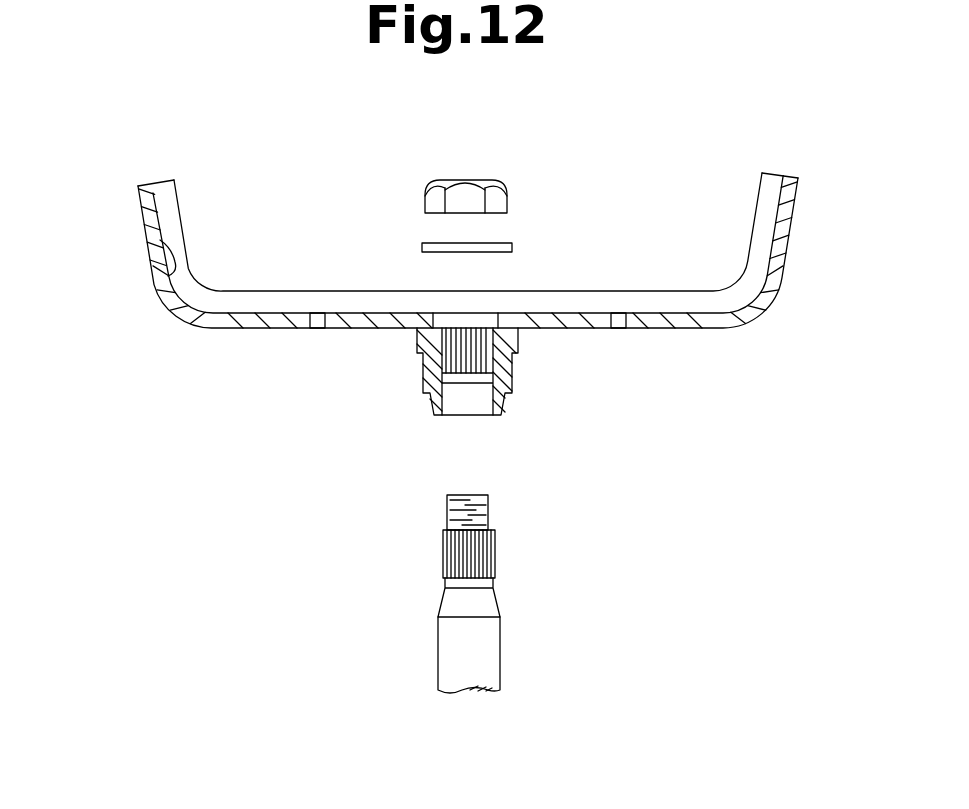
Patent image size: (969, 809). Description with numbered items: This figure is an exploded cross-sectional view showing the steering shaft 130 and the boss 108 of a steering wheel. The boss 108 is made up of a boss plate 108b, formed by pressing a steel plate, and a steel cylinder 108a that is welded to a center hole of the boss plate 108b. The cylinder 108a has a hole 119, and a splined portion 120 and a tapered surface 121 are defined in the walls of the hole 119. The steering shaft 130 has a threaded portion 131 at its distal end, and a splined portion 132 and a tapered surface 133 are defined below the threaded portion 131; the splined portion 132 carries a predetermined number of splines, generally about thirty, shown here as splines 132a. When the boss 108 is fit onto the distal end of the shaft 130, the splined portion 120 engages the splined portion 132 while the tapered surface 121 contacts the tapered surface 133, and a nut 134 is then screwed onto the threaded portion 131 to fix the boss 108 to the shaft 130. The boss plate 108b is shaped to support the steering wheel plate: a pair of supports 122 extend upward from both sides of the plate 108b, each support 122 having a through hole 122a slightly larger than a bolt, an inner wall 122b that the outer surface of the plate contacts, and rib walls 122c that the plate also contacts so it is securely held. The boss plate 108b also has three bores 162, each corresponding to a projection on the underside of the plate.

The support 122 is at (152, 190).
The through hole 122a is at (148, 230).
The inner wall 122b is at (178, 263).
The rib wall 122c is at (757, 233).
The bore 162 is at (318, 317).
The nut 134 is at (478, 160).
The splined portion 120 is at (488, 330).
The hole 119 is at (487, 385).
The tapered surface 121 is at (492, 405).
The boss 108 is at (348, 387).
The steel cylinder 108a is at (423, 370).
The boss plate 108b is at (360, 330).
The steering shaft 130 is at (500, 660).
The threaded portion 131 is at (488, 512).
The splined portion 132 is at (455, 555).
The serrations 132a is at (414, 555).
The tapered surface 133 is at (498, 600).